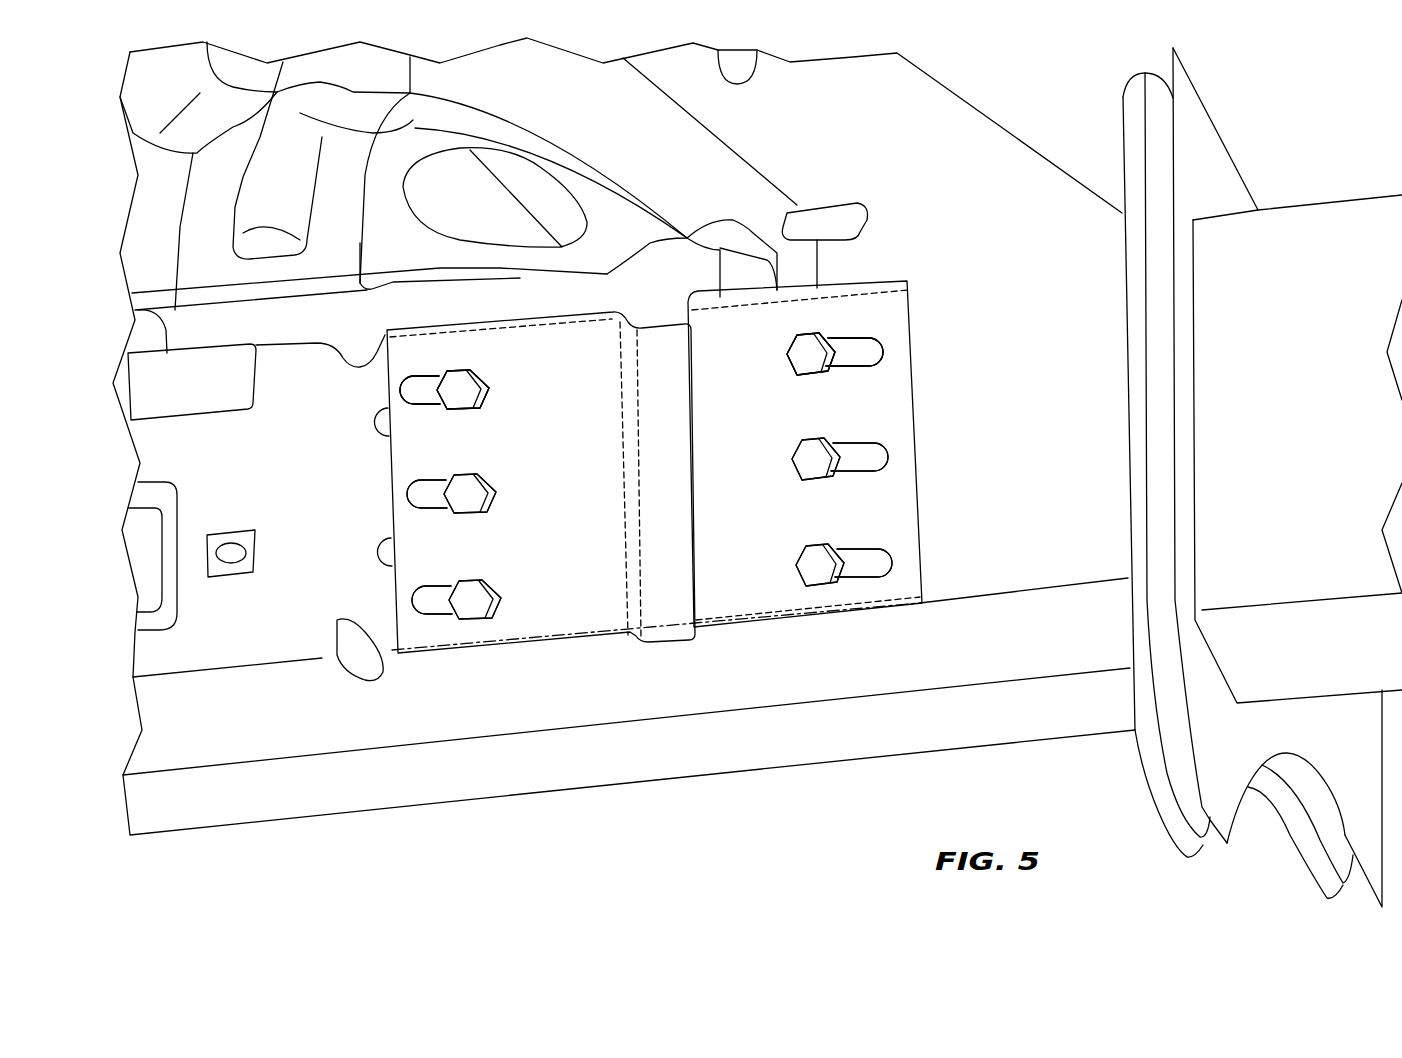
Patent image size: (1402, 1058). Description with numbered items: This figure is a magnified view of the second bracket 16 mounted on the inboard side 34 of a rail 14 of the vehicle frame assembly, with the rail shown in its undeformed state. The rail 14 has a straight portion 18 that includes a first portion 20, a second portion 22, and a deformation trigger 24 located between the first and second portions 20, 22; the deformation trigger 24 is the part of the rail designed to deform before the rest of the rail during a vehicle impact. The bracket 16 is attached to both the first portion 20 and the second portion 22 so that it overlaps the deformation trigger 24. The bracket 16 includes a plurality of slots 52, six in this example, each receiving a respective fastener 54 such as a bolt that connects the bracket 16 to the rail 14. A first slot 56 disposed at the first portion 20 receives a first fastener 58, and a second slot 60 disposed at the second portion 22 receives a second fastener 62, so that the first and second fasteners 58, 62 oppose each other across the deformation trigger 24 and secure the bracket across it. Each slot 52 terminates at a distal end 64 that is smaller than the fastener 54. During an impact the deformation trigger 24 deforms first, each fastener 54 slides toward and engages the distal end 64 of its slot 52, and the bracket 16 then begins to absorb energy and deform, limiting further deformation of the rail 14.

The rail 14 is at (333, 797).
The bracket 16 is at (722, 583).
The straight portion 18 is at (722, 360).
The first portion 20 is at (450, 345).
The second portion 22 is at (850, 316).
The deformation trigger 24 is at (670, 610).
The inboard side 34 is at (1055, 312).
The slot 52 is at (893, 553).
The fastener 54 is at (487, 400).
The first slot 56 is at (420, 383).
The first fastener 58 is at (466, 370).
The second slot 60 is at (860, 337).
The second fastener 62 is at (797, 343).
The distal end 64 is at (397, 392).